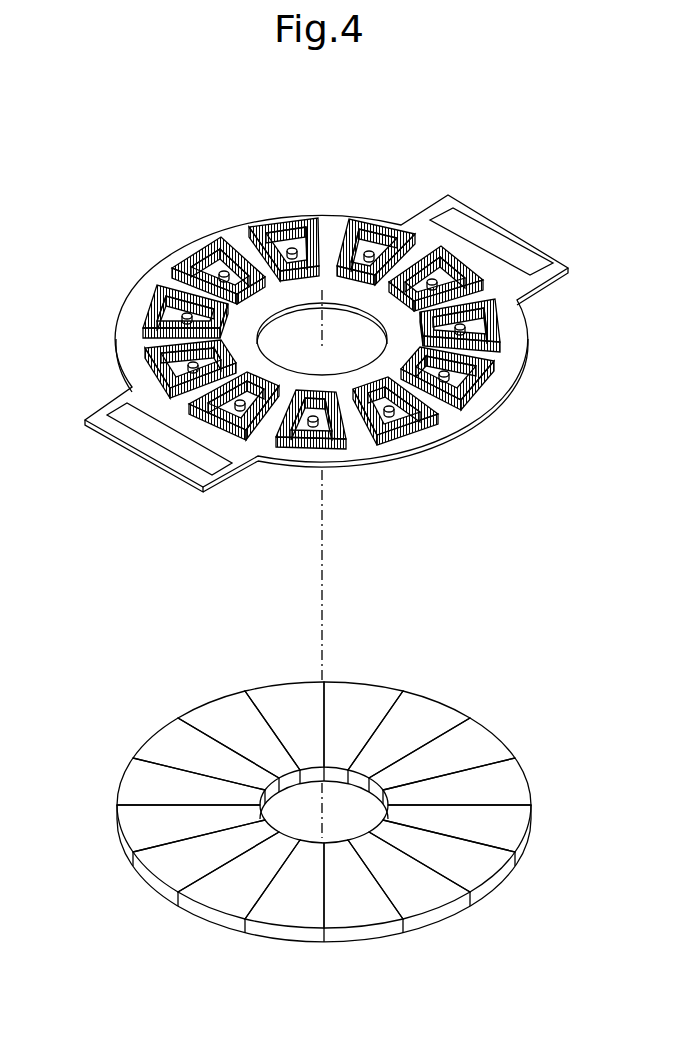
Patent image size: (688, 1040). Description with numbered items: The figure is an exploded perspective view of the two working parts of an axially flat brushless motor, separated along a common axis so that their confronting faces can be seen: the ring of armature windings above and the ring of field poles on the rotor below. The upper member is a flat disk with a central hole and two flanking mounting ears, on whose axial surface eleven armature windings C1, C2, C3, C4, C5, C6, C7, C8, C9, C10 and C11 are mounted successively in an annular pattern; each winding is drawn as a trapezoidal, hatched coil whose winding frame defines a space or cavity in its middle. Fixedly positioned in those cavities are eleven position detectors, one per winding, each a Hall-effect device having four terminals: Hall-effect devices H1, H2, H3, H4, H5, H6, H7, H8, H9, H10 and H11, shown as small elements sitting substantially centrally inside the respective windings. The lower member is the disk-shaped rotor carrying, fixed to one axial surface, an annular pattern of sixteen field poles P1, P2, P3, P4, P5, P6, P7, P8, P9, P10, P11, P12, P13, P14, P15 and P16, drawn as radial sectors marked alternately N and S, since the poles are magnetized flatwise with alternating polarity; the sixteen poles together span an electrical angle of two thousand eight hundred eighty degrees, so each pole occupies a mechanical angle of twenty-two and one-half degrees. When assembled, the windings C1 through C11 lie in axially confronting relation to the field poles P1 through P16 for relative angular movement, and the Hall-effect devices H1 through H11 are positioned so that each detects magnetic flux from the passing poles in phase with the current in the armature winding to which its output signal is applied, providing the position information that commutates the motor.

The armature winding C1 is at (258, 228).
The armature winding C2 is at (492, 385).
The armature winding C3 is at (155, 375).
The armature winding C4 is at (357, 226).
The armature winding C5 is at (418, 432).
The armature winding C6 is at (152, 305).
The armature winding C7 is at (470, 268).
The armature winding C8 is at (328, 448).
The armature winding C9 is at (193, 268).
The armature winding C10 is at (510, 318).
The armature winding C11 is at (205, 425).
The Hall-effect device H1 is at (214, 262).
The Hall-effect device H2 is at (500, 335).
The Hall-effect device H3 is at (236, 408).
The Hall-effect device H4 is at (294, 238).
The Hall-effect device H5 is at (485, 372).
The Hall-effect device H6 is at (170, 348).
The Hall-effect device H7 is at (378, 246).
The Hall-effect device H8 is at (390, 415).
The Hall-effect device H9 is at (185, 307).
The Hall-effect device H10 is at (483, 284).
The Hall-effect device H11 is at (308, 425).
The field pole P1 is at (430, 710).
The field pole P2 is at (488, 742).
The field pole P3 is at (515, 783).
The field pole P4 is at (510, 823).
The field pole P5 is at (497, 877).
The field pole P6 is at (440, 913).
The field pole P7 is at (377, 933).
The field pole P8 is at (293, 933).
The field pole P9 is at (220, 920).
The field pole P10 is at (162, 887).
The field pole P11 is at (130, 828).
The field pole P12 is at (137, 783).
The field pole P13 is at (163, 745).
The field pole P14 is at (215, 712).
The field pole P15 is at (272, 710).
The field pole P16 is at (370, 702).